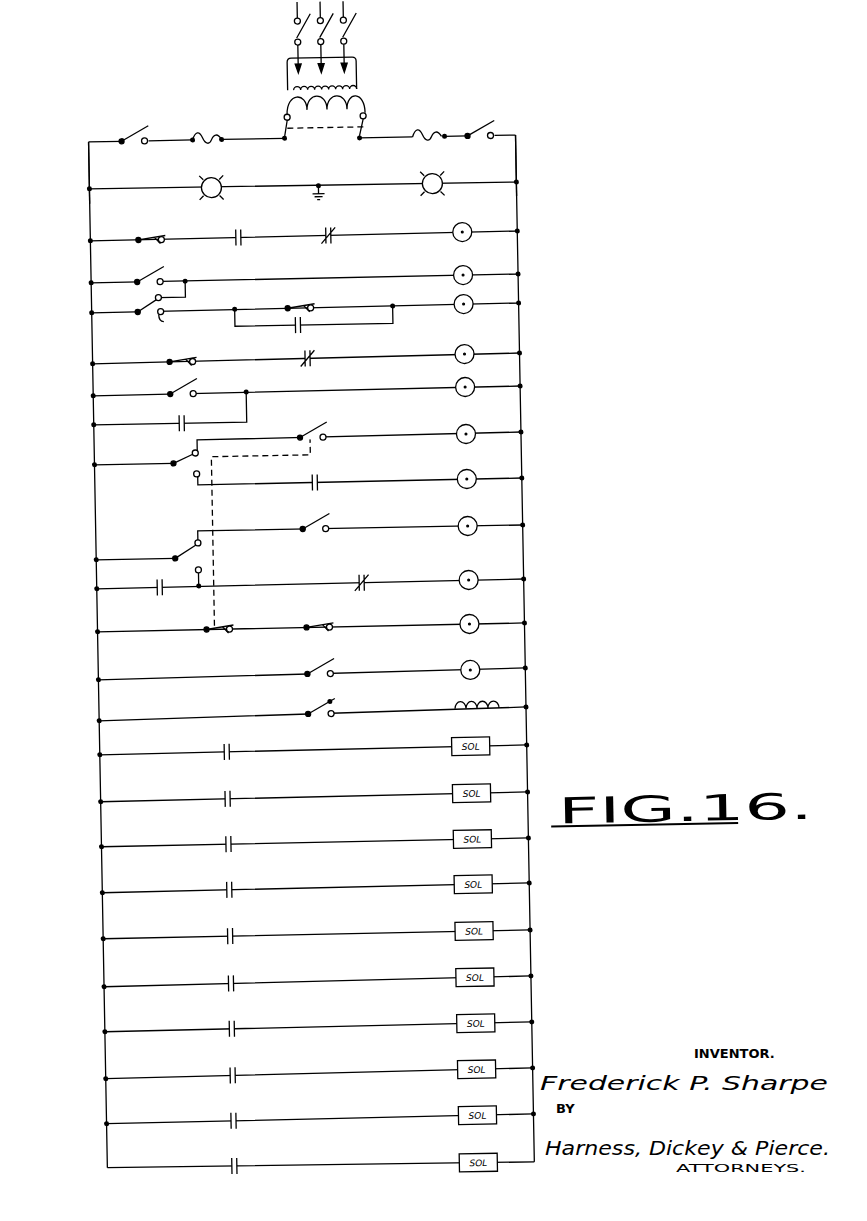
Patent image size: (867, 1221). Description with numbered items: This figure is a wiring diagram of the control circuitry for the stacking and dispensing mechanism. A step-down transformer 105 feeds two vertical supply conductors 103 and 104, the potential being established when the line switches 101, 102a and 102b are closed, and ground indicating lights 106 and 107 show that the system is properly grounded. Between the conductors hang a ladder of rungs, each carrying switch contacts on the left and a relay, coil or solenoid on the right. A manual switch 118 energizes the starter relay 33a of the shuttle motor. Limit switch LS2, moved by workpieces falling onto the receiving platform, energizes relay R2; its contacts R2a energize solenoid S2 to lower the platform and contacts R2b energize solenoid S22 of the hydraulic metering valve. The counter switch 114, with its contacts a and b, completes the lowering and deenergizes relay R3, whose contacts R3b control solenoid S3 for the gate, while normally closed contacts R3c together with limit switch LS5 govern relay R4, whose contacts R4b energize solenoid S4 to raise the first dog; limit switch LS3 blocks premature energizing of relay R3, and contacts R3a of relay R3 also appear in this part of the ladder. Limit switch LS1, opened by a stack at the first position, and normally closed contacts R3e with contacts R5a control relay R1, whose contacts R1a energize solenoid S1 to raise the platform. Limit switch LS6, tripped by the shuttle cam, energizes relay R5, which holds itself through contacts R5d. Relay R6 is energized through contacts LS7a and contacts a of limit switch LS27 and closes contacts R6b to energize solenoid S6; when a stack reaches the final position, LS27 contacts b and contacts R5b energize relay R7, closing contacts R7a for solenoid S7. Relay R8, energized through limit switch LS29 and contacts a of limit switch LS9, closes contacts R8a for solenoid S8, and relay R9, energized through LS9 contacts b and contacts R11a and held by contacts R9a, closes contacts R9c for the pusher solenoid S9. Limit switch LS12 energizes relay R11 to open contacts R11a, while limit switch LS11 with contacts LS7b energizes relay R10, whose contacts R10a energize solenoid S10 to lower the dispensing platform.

The switch 101 is at (376, 127).
The line switch 102a is at (156, 122).
The line switch 102b is at (502, 126).
The conductor 103 is at (98, 167).
The conductor 104 is at (530, 161).
The step-down transformer 105 is at (364, 101).
The ground indicating light 106 is at (230, 181).
The ground indicating light 107 is at (451, 180).
The counter switch 114 is at (150, 298).
The switch 118 is at (321, 706).
The relay R1 is at (474, 226).
The relay R2 is at (476, 269).
The relay R3 is at (478, 299).
The relay R4 is at (475, 348).
The relay R5 is at (477, 382).
The relay R6 is at (476, 428).
The relay R7 is at (477, 473).
The relay R8 is at (477, 520).
The relay R9 is at (477, 574).
The relay R10 is at (477, 618).
The relay R11 is at (477, 664).
The starter relay 33a is at (490, 695).
The limit switch LS1 is at (154, 232).
The limit switch LS2 is at (152, 270).
The limit switch LS3 is at (300, 304).
The limit switch LS5 is at (178, 355).
The limit switch LS6 is at (180, 384).
The limit switch contacts LS7a is at (325, 420).
The limit switch contacts LS7b is at (219, 622).
The limit switch LS9 is at (175, 551).
The limit switch LS11 is at (326, 610).
The limit switch LS12 is at (320, 664).
The limit switch LS27 is at (185, 474).
The limit switch LS29 is at (312, 513).
The relay contacts R5a is at (248, 228).
The normally closed relay contacts R3e is at (342, 228).
The relay R3 contact R3a is at (299, 330).
The normally closed relay contacts R3c is at (318, 350).
The holding contact R5d is at (190, 417).
The relay contacts R5b is at (324, 475).
The relay contacts R11a is at (366, 575).
The holding contacts R9a is at (160, 598).
The relay contacts R1a is at (229, 746).
The normally open relay contacts R2a is at (229, 792).
The relay contacts R2b is at (229, 837).
The normally open relay contacts R3b is at (229, 883).
The relay contacts R4b is at (229, 929).
The relay contacts R6b is at (229, 977).
The relay contacts R7a is at (229, 1022).
The relay contacts R8a is at (229, 1069).
The relay contacts R9c is at (229, 1114).
The relay contacts R10a is at (229, 1159).
The solenoid S1 is at (479, 742).
The solenoid S2 is at (479, 788).
The solenoid S22 is at (479, 834).
The solenoid S3 is at (479, 879).
The solenoid S4 is at (479, 926).
The solenoid S6 is at (479, 972).
The solenoid S7 is at (479, 1018).
The solenoid S8 is at (479, 1064).
The solenoid S9 is at (479, 1110).
The solenoid S10 is at (479, 1157).